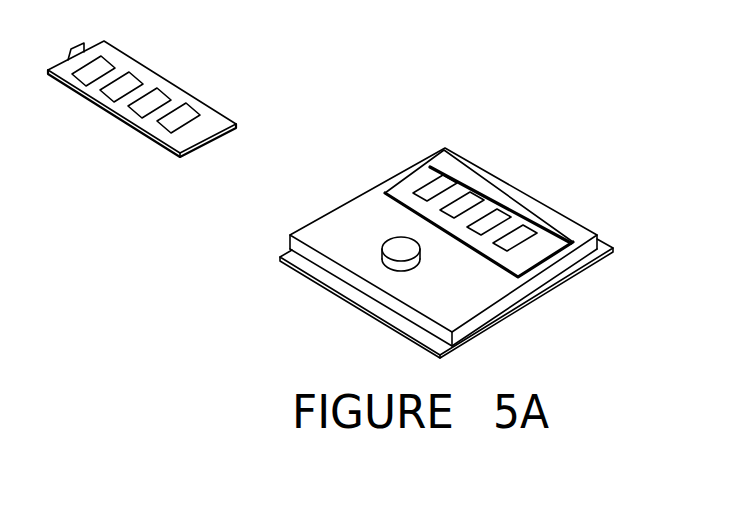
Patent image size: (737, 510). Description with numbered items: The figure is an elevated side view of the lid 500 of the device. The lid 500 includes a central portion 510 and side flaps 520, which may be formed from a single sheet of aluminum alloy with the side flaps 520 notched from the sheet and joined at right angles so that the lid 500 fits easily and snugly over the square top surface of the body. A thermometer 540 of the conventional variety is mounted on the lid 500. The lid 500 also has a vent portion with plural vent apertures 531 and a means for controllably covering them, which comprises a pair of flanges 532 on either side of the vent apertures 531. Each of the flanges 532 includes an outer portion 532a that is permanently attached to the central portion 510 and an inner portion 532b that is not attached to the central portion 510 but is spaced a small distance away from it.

The lid 500 is at (453, 213).
The central portion 510 is at (417, 245).
The side flaps 520 is at (290, 245).
The vent apertures 531 is at (513, 242).
The flanges 532 is at (515, 198).
The outer portion 532a is at (217, 116).
The inner portion 532b is at (665, 219).
The thermometer 540 is at (316, 233).